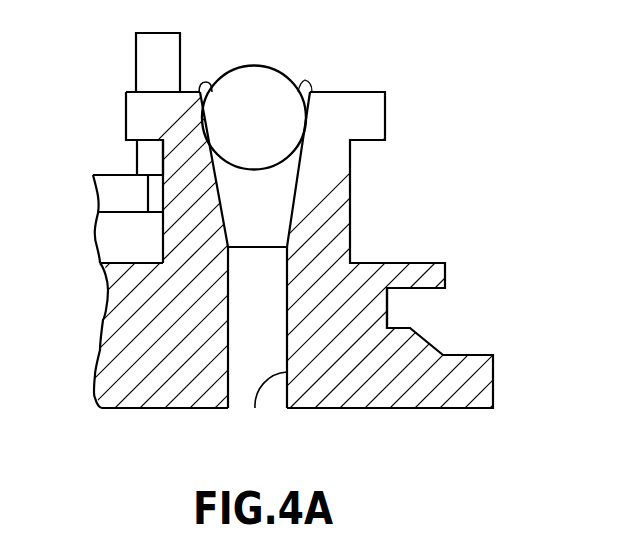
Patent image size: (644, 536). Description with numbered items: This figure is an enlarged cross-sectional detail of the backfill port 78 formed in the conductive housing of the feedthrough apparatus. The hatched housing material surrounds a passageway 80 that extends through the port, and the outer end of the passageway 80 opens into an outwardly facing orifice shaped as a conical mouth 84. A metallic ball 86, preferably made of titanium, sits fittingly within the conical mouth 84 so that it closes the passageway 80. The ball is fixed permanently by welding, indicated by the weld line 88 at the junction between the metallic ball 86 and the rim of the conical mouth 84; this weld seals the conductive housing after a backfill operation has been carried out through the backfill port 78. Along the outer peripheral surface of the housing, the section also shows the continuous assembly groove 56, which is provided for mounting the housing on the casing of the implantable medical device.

The assembly groove 56 is at (388, 317).
The backfill port 78 is at (340, 173).
The passageway 80 is at (253, 408).
The conical mouth 84 is at (272, 203).
The metallic ball 86 is at (283, 87).
The weld line 88 is at (205, 82).